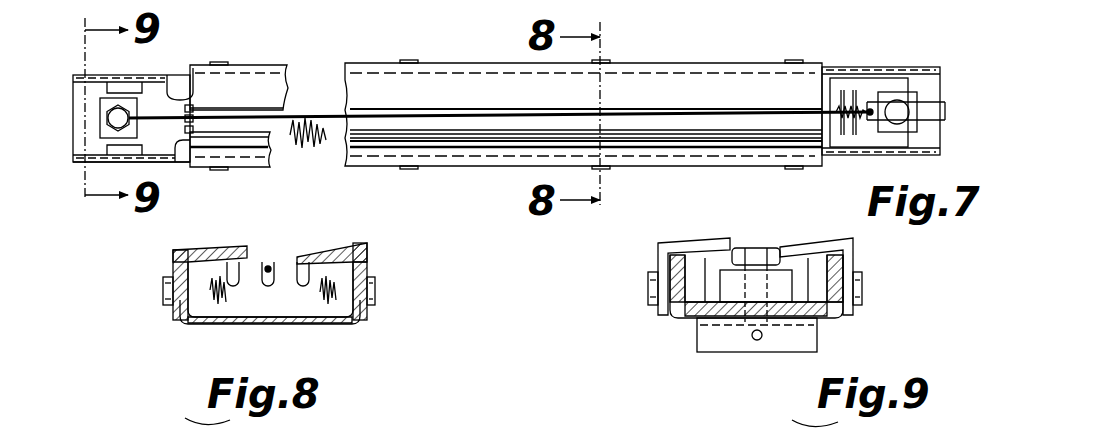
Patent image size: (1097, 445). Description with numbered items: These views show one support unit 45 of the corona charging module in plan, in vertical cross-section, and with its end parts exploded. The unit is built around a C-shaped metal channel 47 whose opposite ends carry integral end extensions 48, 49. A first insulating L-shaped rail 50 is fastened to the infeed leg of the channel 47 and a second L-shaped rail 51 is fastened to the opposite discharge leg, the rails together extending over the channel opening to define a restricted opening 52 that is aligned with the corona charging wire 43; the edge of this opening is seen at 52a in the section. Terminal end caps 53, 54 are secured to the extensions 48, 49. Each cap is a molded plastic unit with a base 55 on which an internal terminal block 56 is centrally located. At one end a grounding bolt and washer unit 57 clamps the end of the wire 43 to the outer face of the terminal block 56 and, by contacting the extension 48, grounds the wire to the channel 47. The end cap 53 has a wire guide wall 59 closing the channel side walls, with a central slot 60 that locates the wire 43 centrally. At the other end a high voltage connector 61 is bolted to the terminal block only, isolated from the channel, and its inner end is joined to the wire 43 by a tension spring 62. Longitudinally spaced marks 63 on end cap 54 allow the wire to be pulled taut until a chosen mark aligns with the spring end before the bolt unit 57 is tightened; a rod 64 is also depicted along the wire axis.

In FIG. 7, the charging wire 43 is at (326, 96).
In FIG. 8, the charging wire 43 is at (268, 265).
In FIG. 9, the charging wire 43 is at (740, 265).
In FIG. 7, the support unit 45 is at (664, 62).
In FIG. 7, the C-shaped metal channel 47 is at (330, 52).
In FIG. 8, the C-shaped metal channel 47 is at (233, 326).
In FIG. 7, the end extension 48 is at (180, 78).
In FIG. 9, the end extension 48 is at (727, 326).
In FIG. 7, the end extension 49 is at (920, 88).
In FIG. 7, the first insulating L-shaped rail 50 is at (470, 88).
In FIG. 8, the first insulating L-shaped rail 50 is at (212, 218).
In FIG. 7, the second L-shaped rail 51 is at (490, 148).
In FIG. 8, the second L-shaped rail 51 is at (358, 242).
In FIG. 8, the restricted opening 52 is at (280, 256).
In FIG. 8, the slot edge 52a is at (369, 264).
In FIG. 7, the terminal end cap 53 is at (73, 166).
In FIG. 9, the terminal end cap 53 is at (820, 286).
In FIG. 7, the terminal end cap 54 is at (898, 66).
In FIG. 7, the base 55 is at (78, 105).
In FIG. 9, the base 55 is at (700, 312).
In FIG. 7, the terminal block 56 is at (102, 130).
In FIG. 9, the terminal block 56 is at (783, 296).
In FIG. 7, the grounding bolt and washer unit 57 is at (121, 106).
In FIG. 9, the grounding bolt and washer unit 57 is at (774, 246).
In FIG. 7, the wire guide wall 59 is at (186, 145).
In FIG. 8, the wire guide wall 59 is at (328, 305).
In FIG. 8, the central slot 60 is at (268, 300).
In FIG. 7, the high voltage connector 61 is at (940, 112).
In FIG. 7, the tension spring 62 is at (846, 102).
In FIG. 7, the tension marks 63 is at (857, 132).
In FIG. 7, the rod 64 is at (132, 118).